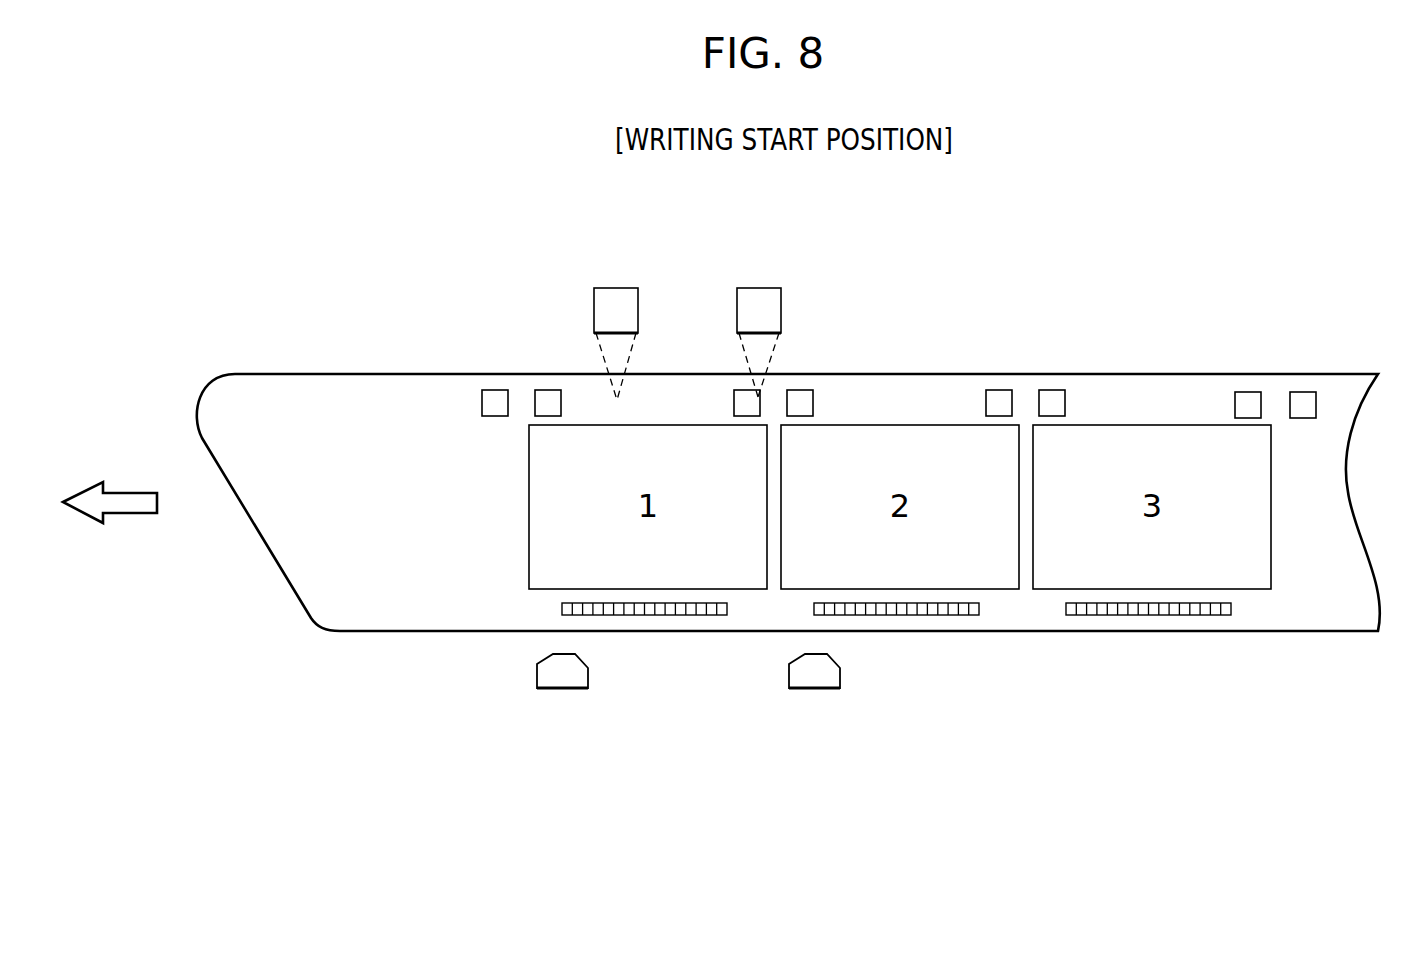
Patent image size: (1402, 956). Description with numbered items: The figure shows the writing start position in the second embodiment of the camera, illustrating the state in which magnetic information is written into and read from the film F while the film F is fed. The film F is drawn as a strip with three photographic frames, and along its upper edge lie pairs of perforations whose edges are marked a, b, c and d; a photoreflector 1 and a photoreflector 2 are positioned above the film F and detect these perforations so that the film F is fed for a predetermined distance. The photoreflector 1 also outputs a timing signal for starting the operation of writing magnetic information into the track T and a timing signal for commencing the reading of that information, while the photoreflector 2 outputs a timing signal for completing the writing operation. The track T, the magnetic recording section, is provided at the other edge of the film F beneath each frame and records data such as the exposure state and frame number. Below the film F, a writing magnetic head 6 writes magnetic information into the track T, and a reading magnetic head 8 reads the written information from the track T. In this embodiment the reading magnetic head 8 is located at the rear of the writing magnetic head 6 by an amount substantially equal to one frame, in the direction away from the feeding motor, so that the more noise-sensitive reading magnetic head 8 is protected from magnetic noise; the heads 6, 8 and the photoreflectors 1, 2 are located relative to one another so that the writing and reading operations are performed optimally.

The photoreflector 1 is at (615, 288).
The photoreflector 2 is at (757, 288).
The writing magnetic head 6 is at (557, 688).
The reading magnetic head 8 is at (809, 688).
The track T is at (727, 609).
The film F is at (1133, 374).
The perforation edge a is at (738, 427).
The perforation edge b is at (763, 434).
The perforation edge c is at (795, 427).
The perforation edge d is at (820, 434).